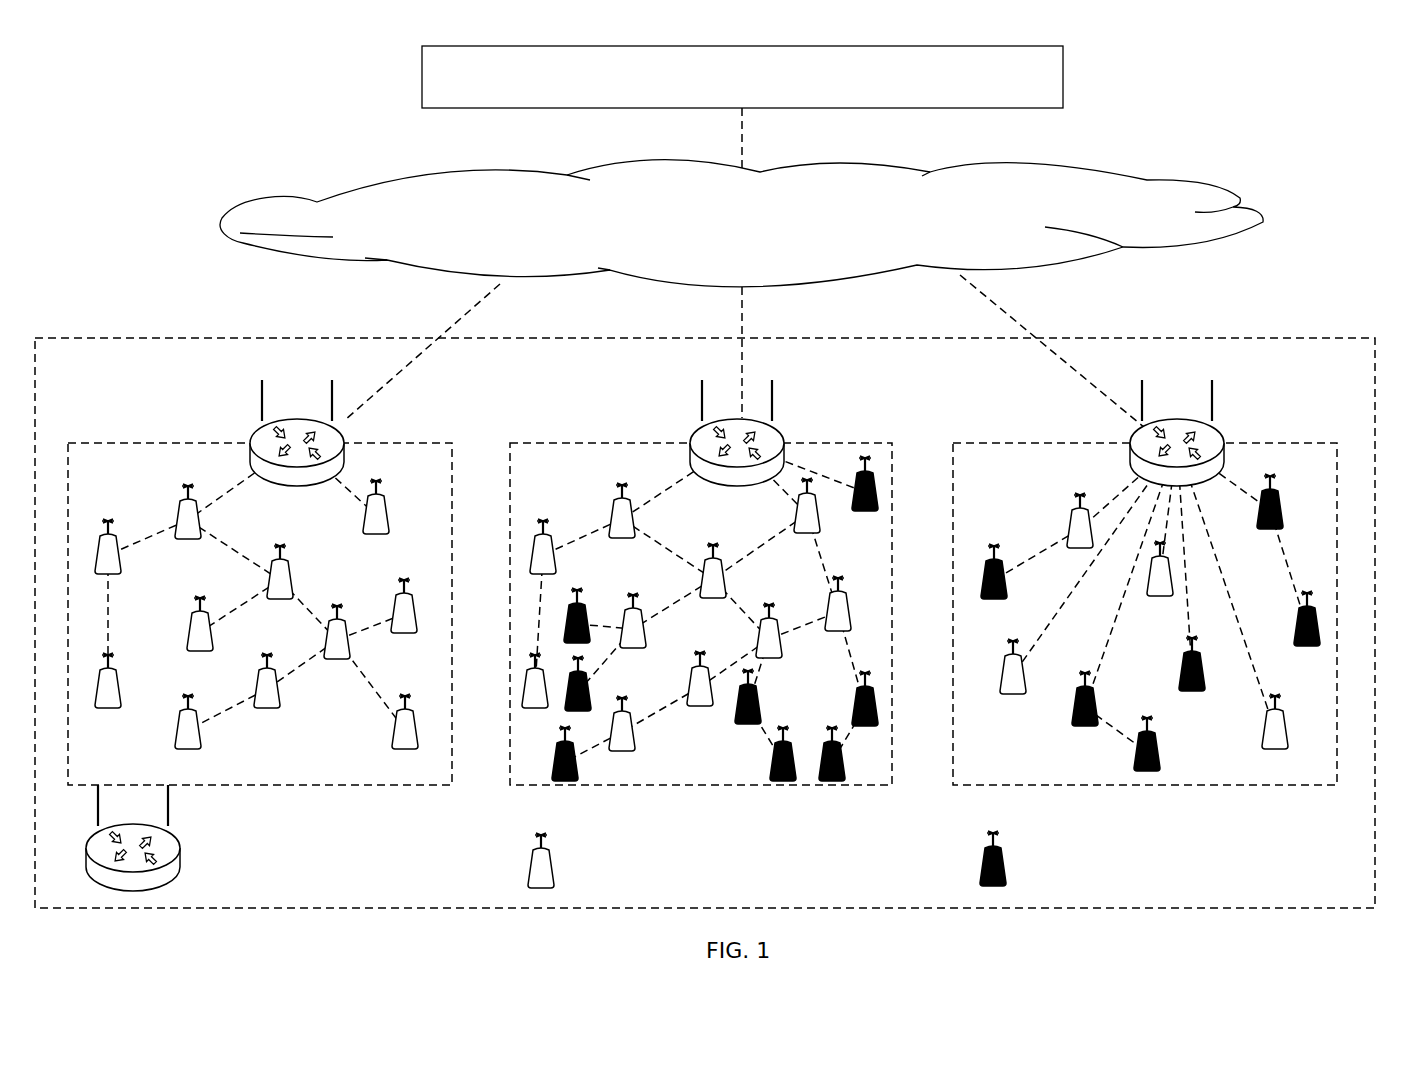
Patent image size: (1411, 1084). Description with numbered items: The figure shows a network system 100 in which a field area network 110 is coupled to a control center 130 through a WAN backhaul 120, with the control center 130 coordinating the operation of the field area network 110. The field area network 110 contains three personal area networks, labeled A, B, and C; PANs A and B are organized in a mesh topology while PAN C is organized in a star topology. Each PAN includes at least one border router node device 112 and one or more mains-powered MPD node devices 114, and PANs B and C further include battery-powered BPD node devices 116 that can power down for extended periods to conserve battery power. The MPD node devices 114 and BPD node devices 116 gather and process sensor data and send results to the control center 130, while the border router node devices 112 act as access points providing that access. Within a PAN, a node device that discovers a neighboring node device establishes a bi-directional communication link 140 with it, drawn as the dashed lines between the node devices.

The network system 100 is at (1292, 91).
The field area network 110 is at (287, 377).
The border router node device 112 is at (181, 860).
The MPD node device 114 is at (604, 846).
The BPD node device 116 is at (1058, 846).
The WAN backhaul 120 is at (806, 233).
The control center 130 is at (840, 88).
The communication link 140 is at (208, 718).